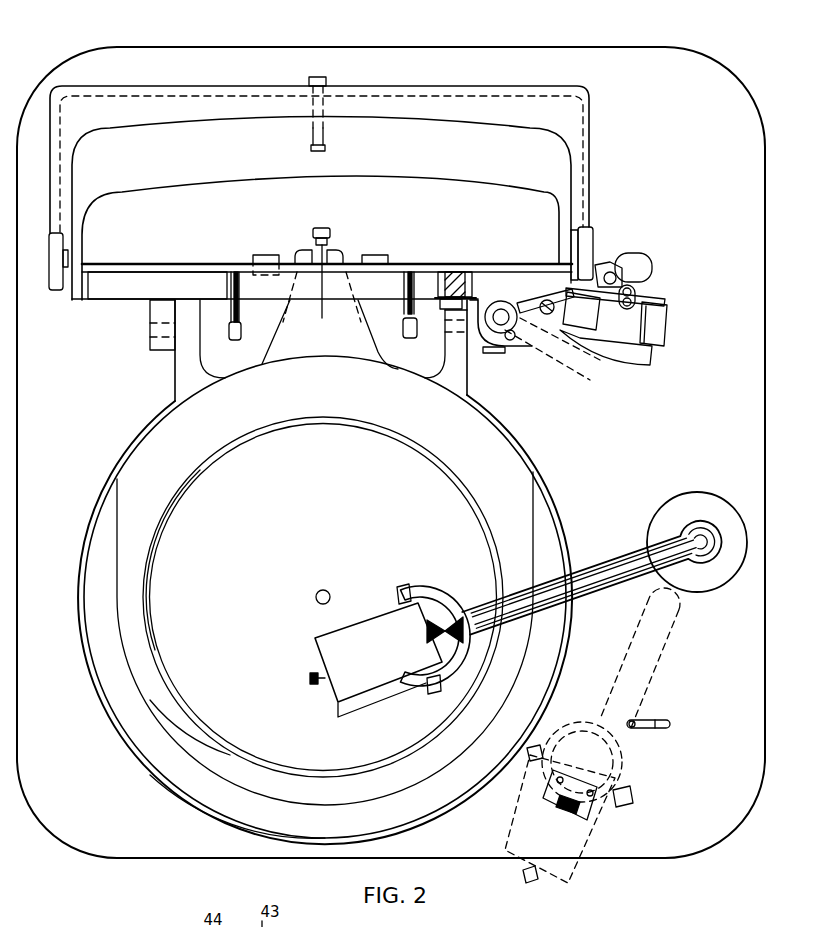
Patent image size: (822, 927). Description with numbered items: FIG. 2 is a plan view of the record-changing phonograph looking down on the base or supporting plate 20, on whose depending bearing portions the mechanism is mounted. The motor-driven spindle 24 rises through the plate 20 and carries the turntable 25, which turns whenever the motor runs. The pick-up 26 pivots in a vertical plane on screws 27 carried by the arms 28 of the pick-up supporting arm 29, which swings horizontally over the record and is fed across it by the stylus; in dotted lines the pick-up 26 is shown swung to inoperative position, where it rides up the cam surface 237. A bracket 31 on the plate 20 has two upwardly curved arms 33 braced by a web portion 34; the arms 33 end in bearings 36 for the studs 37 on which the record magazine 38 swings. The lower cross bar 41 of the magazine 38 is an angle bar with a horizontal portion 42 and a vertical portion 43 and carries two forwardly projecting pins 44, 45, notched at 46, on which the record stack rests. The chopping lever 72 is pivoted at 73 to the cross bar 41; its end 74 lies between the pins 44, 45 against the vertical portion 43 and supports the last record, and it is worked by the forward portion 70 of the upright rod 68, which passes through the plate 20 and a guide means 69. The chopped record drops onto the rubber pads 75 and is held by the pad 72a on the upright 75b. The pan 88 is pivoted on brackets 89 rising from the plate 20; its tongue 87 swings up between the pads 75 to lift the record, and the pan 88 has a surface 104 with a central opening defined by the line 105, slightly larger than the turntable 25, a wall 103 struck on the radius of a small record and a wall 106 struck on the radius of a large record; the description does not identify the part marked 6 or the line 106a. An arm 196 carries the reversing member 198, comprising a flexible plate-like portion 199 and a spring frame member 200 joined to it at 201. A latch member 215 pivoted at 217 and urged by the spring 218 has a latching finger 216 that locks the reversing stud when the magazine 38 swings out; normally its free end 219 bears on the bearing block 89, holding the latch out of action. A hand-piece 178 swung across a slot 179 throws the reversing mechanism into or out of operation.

The base or supporting plate 20 is at (104, 840).
The spindle 24 is at (317, 592).
The turntable 25 is at (163, 645).
The pick-up 26 is at (347, 636).
The screws or bearing means 27 is at (408, 585).
The arms 28 is at (442, 588).
The pick-up supporting arm 29 is at (605, 557).
The bracket 31 is at (490, 104).
The arms 33 is at (590, 164).
The web portion 34 is at (406, 108).
The bearings 36 is at (592, 242).
The short shafts or studs 37 is at (586, 250).
The record magazine 38 is at (533, 155).
The lower cross bar 41 is at (130, 263).
The horizontal portion 42 is at (118, 302).
The vertical portion 43 is at (155, 268).
The supporting pin 44 is at (241, 330).
The supporting pin 45 is at (403, 312).
The notch 46 is at (412, 330).
The adjusting screw 6 is at (322, 215).
The upright rod 68 is at (612, 270).
The guide means 69 is at (630, 258).
The forward portion 70 is at (662, 344).
The knife or chopping lever 72 is at (488, 296).
The pad 72a is at (316, 241).
The pivot 73 is at (444, 304).
The end of lever 74 is at (302, 305).
The rubber blocks or pads 75 is at (380, 255).
The upright 75b is at (313, 230).
The tongue or projection 87 is at (340, 252).
The pan 88 is at (540, 465).
The brackets 89 is at (470, 345).
The wall 103 is at (298, 802).
The portion 104 is at (196, 746).
The line 105 is at (176, 693).
The wall 106 is at (234, 819).
The rim step 106a is at (204, 786).
The hand-piece 178 is at (634, 721).
The slot 179 is at (655, 719).
The arm 196 is at (503, 302).
The reversing member 198 is at (668, 308).
The flexible plate-like portion 199 is at (652, 345).
The spring frame member 200 is at (670, 330).
The connection 201 is at (632, 296).
The latch member 215 is at (516, 345).
The latching finger 216 is at (565, 365).
The pivot 217 is at (606, 356).
The spring 218 is at (528, 300).
The free end 219 is at (493, 356).
The cam surface 237 is at (553, 797).